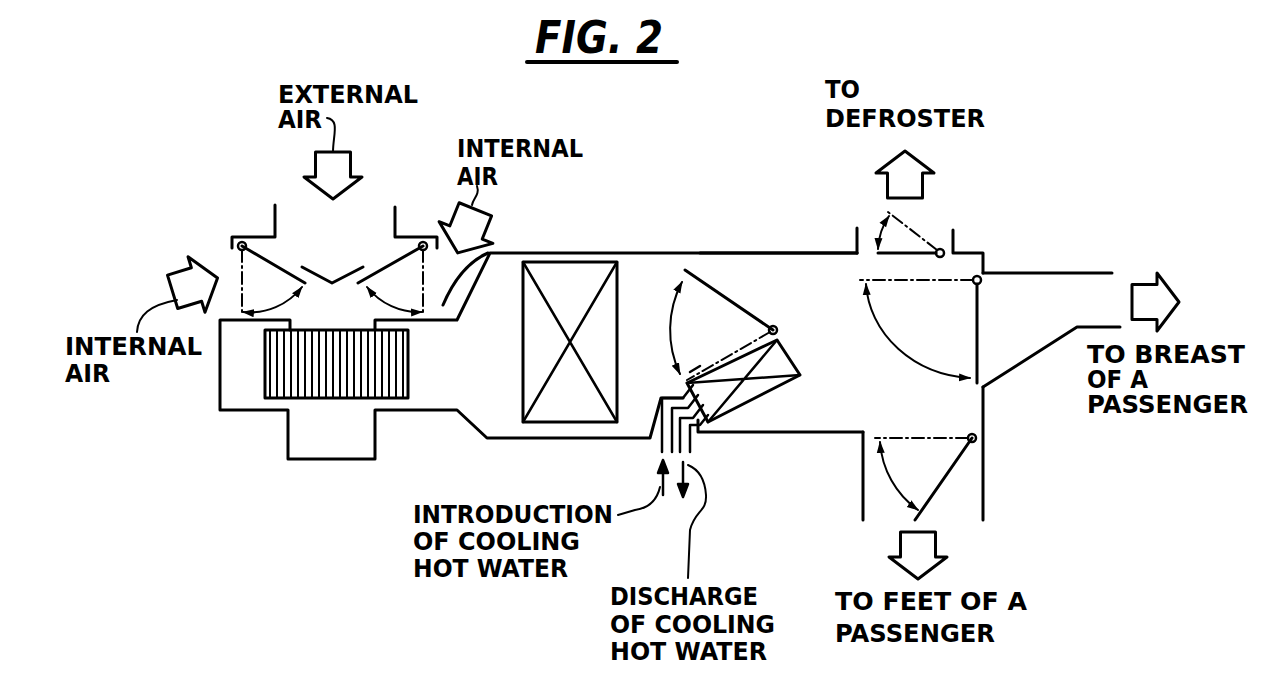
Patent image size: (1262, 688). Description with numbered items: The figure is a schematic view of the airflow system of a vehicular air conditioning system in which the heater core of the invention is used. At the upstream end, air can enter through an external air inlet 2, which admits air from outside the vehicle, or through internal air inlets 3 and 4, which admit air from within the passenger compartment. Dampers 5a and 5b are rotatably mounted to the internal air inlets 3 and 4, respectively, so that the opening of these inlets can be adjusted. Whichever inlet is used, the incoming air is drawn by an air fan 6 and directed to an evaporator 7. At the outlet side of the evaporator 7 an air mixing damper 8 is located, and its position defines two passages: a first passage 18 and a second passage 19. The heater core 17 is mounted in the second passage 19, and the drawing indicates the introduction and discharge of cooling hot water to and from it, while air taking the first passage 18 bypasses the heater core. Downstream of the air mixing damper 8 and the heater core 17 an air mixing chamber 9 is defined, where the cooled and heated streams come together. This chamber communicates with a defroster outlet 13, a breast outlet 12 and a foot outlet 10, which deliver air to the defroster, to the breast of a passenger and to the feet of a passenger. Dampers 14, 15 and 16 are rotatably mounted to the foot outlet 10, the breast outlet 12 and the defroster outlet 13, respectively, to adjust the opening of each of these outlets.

The external air inlet 2 is at (312, 217).
The internal air inlet 3 is at (228, 278).
The internal air inlet 4 is at (494, 252).
The damper 5a is at (285, 220).
The damper 5b is at (368, 222).
The air fan 6 is at (313, 400).
The evaporator 7 is at (570, 273).
The air mixing damper 8 is at (710, 280).
The air mixing chamber 9 is at (825, 413).
The foot outlet 10 is at (952, 515).
The breast outlet 12 is at (1112, 288).
The defroster outlet 13 is at (867, 233).
The damper 14 is at (943, 483).
The damper 15 is at (979, 300).
The damper 16 is at (907, 250).
The heater core 17 is at (731, 407).
The first passage 18 is at (777, 270).
The second passage 19 is at (690, 372).